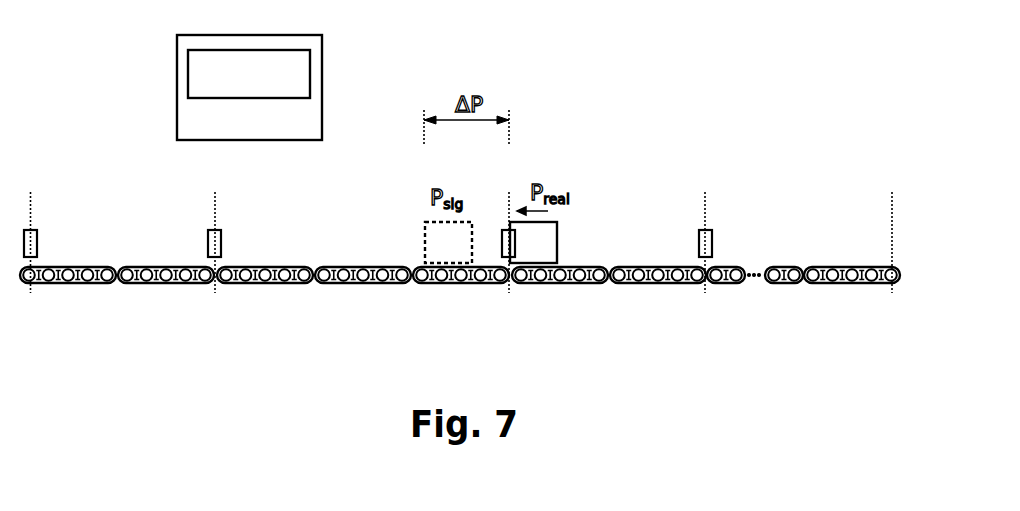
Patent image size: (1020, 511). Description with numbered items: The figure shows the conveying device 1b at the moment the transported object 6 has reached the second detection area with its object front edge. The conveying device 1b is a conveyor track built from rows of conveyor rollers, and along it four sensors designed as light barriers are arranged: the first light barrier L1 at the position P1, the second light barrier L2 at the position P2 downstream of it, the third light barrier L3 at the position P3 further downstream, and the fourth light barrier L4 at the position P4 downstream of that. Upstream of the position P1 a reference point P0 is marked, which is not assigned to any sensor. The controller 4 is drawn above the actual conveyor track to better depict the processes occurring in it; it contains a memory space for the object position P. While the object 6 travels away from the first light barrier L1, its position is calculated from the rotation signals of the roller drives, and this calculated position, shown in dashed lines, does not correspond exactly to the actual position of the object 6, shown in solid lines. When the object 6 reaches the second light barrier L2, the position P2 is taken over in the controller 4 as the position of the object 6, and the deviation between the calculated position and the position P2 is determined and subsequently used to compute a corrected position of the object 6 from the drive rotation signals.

The controller 4 is at (183, 68).
The object 6 is at (491, 242).
The conveying device 1b is at (792, 50).
The first light barrier L1 is at (699, 238).
The second light barrier L2 is at (503, 253).
The third light barrier L3 is at (208, 238).
The fourth light barrier L4 is at (37, 240).
The reference point P0 is at (892, 175).
The position of the first light barrier P1 is at (705, 175).
The position of the second light barrier P2 is at (508, 173).
The position of the third light barrier P3 is at (215, 175).
The position of the fourth light barrier P4 is at (30, 175).